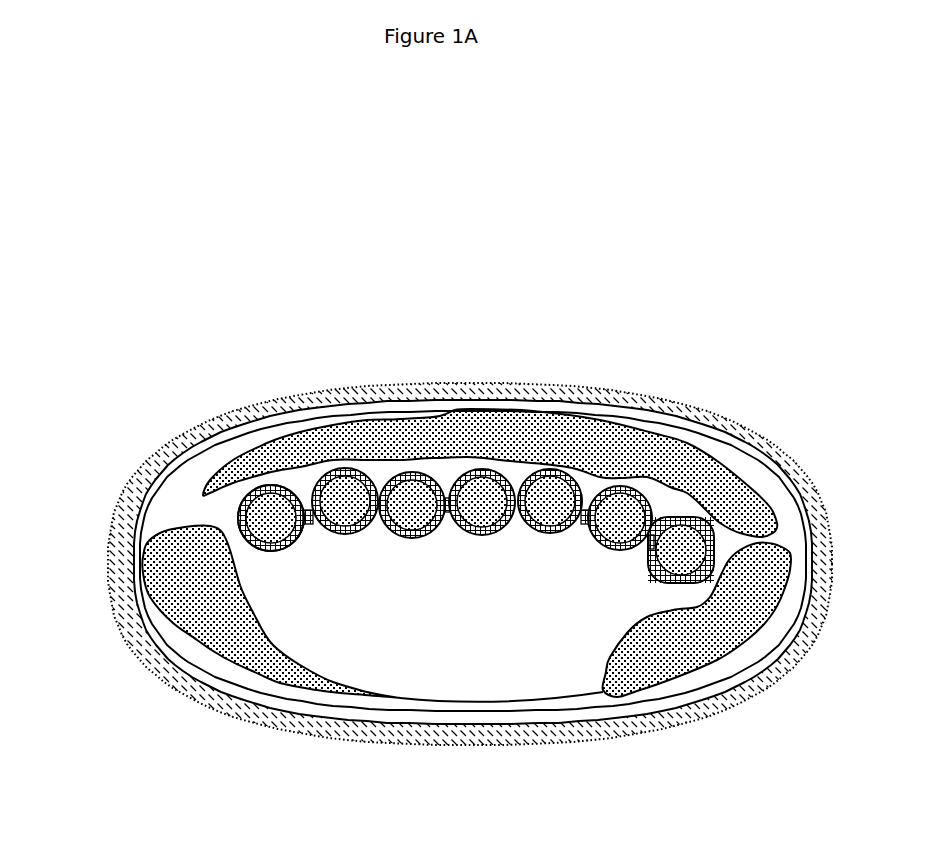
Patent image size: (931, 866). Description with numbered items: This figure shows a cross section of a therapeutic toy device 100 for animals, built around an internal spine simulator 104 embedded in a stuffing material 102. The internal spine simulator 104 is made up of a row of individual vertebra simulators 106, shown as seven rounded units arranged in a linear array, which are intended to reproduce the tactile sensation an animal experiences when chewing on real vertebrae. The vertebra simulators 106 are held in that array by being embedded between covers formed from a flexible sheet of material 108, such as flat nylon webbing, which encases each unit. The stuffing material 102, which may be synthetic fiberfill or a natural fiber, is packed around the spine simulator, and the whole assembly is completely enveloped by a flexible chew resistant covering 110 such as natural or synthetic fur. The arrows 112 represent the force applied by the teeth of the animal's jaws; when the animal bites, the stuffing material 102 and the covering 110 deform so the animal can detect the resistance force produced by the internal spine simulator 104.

The therapeutic toy device 100 is at (110, 273).
The stuffing material 102 is at (770, 570).
The internal spine simulator 104 is at (230, 517).
The vertebra simulator 106 is at (476, 525).
The flexible sheet of material 108 is at (264, 553).
The chew resistant covering 110 is at (122, 593).
The arrows 112 is at (335, 446).